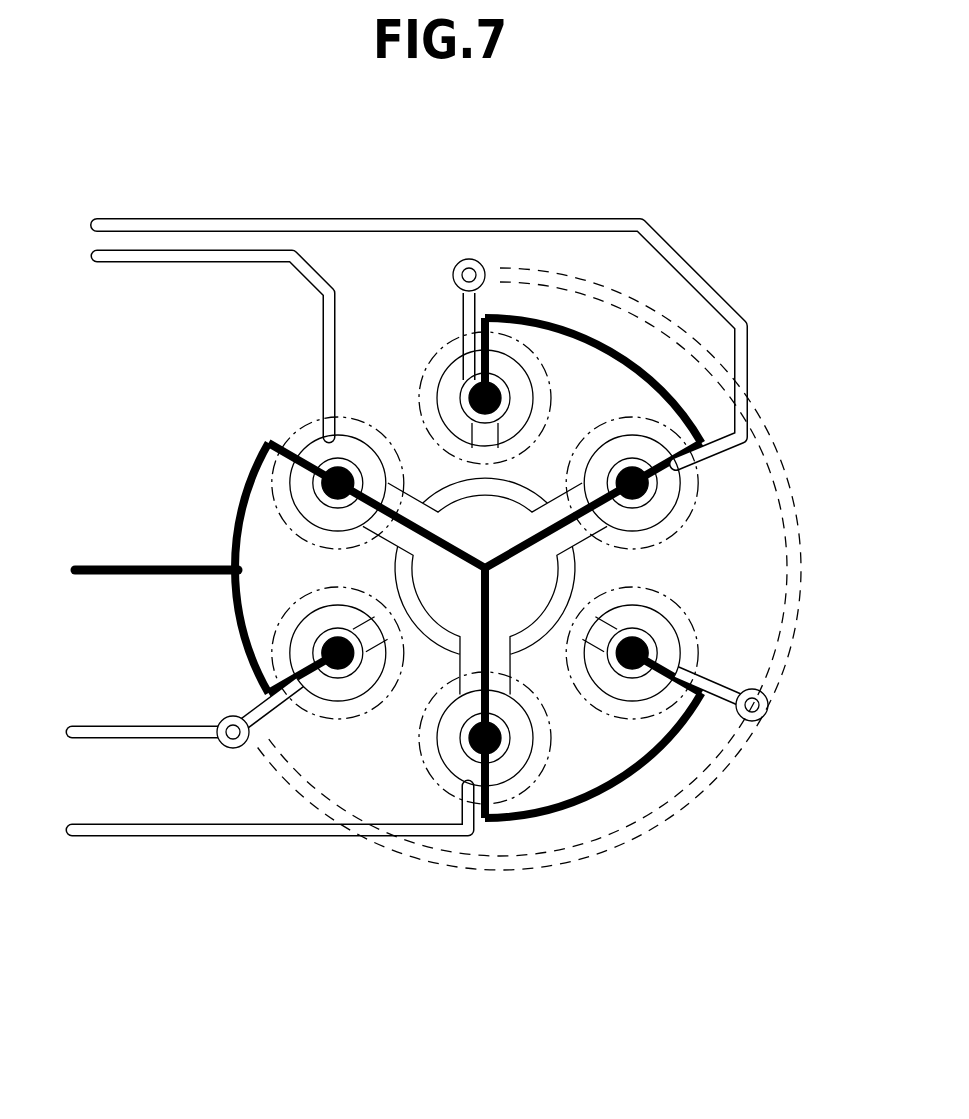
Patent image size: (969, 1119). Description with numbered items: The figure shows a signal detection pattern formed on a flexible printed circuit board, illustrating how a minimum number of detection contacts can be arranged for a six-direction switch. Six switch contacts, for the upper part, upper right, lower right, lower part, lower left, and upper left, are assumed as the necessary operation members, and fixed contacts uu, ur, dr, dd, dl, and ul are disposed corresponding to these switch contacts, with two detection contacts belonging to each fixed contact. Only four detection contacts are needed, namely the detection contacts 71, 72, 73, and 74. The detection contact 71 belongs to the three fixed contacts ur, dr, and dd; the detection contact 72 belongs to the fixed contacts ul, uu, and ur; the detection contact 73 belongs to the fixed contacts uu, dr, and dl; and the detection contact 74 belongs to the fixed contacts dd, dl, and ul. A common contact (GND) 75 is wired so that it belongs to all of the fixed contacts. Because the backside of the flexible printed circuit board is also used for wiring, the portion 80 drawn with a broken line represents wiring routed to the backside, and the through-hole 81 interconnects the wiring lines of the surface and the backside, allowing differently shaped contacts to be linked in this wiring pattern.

The detection contact 71 is at (190, 226).
The detection contact 72 is at (158, 257).
The detection contact 73 is at (130, 739).
The detection contact 74 is at (190, 837).
The common contact (GND) 75 is at (102, 575).
The portion wired to the backside 80 is at (580, 871).
The through-hole 81 is at (469, 258).
The fixed contact uu is at (540, 352).
The fixed contact ur is at (689, 516).
The fixed contact dr is at (674, 602).
The fixed contact dd is at (437, 786).
The fixed contact dl is at (281, 620).
The fixed contact ul is at (295, 440).